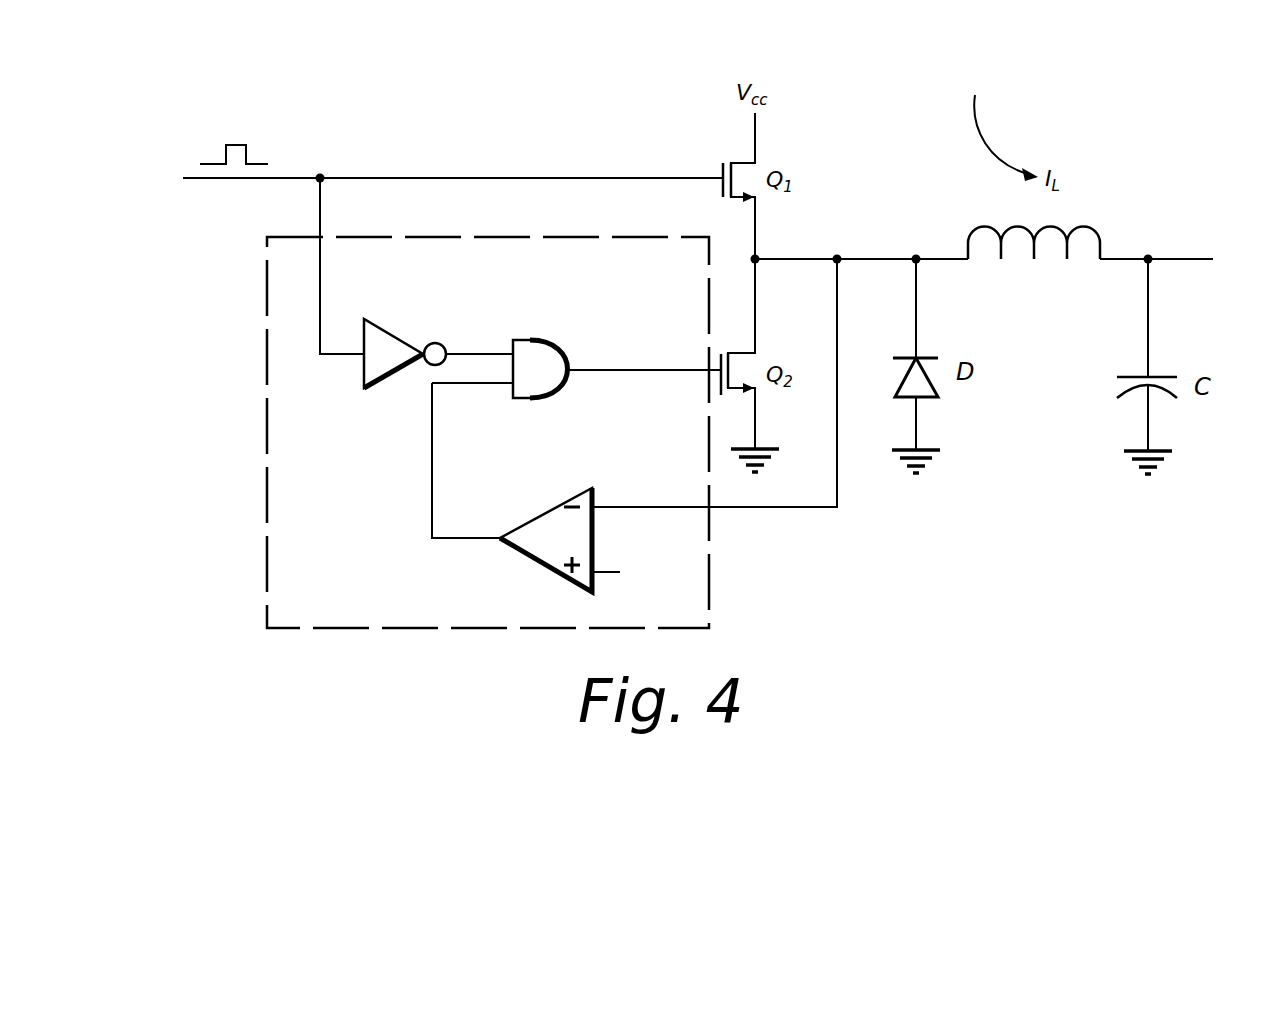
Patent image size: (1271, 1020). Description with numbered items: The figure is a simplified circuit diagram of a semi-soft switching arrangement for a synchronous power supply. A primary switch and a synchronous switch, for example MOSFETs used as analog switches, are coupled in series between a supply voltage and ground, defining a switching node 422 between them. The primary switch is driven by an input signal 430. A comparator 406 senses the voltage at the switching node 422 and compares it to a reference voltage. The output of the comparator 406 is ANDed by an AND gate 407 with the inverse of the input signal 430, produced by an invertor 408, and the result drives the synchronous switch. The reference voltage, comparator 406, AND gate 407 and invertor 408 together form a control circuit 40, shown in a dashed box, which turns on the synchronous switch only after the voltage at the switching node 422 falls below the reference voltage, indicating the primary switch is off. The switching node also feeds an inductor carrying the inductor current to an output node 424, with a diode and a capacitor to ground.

The control circuit 40 is at (266, 530).
The comparator 406 is at (556, 505).
The AND gate 407 is at (555, 352).
The invertor 408 is at (392, 330).
The switching node 422 is at (761, 256).
The output node 424 is at (1148, 256).
The input signal 430 is at (239, 140).